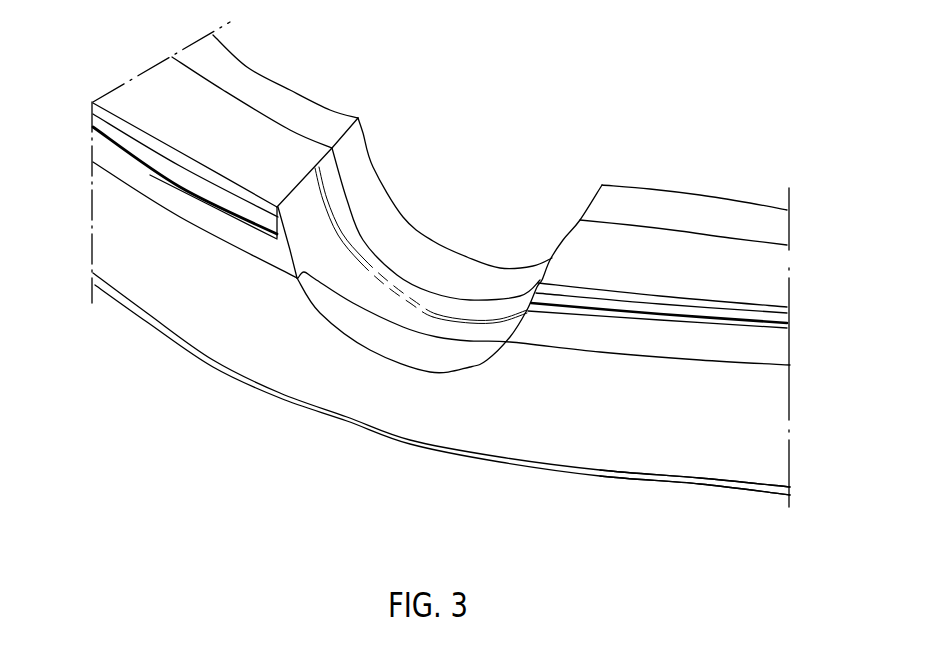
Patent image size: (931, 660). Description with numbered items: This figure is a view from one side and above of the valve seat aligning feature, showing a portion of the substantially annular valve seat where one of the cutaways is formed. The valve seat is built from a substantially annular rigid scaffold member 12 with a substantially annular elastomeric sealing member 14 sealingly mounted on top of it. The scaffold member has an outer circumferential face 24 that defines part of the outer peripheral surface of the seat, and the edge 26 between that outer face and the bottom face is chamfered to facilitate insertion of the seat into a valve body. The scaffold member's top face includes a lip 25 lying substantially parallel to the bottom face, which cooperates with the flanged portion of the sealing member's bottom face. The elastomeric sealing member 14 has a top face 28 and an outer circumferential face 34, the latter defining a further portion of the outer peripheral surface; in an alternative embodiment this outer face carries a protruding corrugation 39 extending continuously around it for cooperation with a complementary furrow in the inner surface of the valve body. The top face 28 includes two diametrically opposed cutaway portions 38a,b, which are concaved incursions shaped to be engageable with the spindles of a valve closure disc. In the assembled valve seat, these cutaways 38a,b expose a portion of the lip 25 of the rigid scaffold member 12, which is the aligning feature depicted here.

The rigid scaffold member 12 is at (693, 443).
The elastomeric sealing member 14 is at (155, 95).
The outer circumferential face 24 is at (165, 300).
The lip 25 is at (347, 321).
The chamfered edge 26 is at (738, 491).
The top face 28 is at (623, 263).
The outer circumferential face 34 is at (120, 177).
The cutaway portions 38a,b is at (412, 250).
The protruding corrugation 39 is at (788, 323).